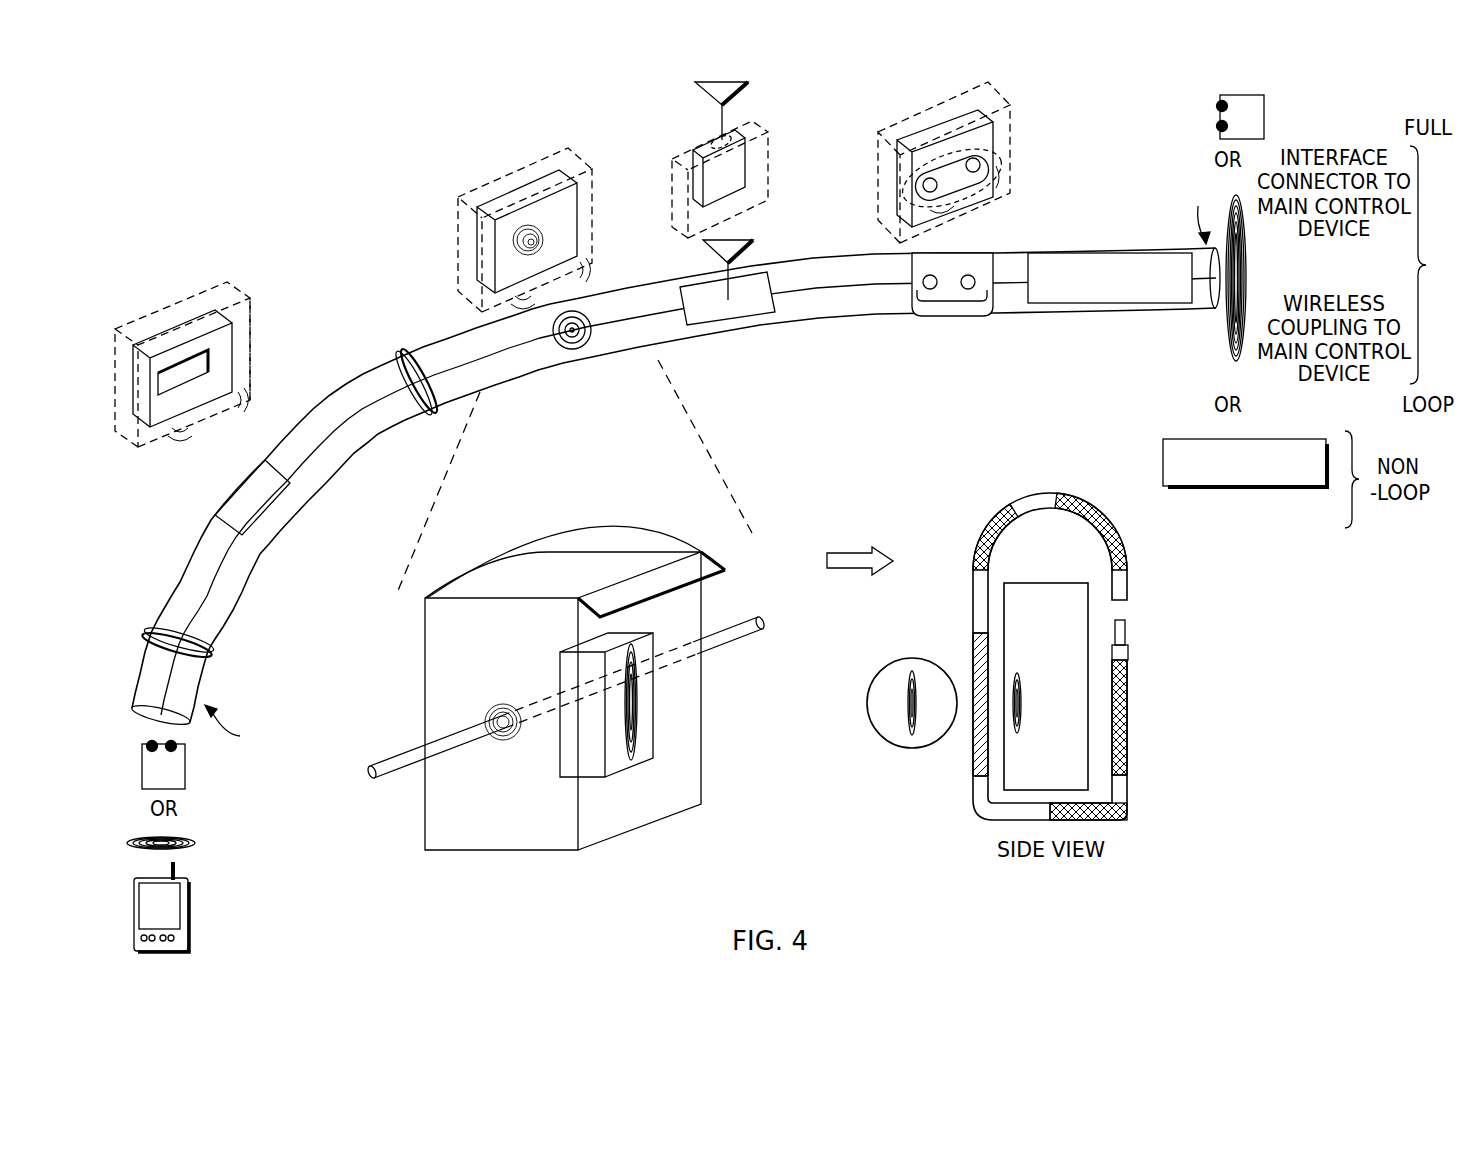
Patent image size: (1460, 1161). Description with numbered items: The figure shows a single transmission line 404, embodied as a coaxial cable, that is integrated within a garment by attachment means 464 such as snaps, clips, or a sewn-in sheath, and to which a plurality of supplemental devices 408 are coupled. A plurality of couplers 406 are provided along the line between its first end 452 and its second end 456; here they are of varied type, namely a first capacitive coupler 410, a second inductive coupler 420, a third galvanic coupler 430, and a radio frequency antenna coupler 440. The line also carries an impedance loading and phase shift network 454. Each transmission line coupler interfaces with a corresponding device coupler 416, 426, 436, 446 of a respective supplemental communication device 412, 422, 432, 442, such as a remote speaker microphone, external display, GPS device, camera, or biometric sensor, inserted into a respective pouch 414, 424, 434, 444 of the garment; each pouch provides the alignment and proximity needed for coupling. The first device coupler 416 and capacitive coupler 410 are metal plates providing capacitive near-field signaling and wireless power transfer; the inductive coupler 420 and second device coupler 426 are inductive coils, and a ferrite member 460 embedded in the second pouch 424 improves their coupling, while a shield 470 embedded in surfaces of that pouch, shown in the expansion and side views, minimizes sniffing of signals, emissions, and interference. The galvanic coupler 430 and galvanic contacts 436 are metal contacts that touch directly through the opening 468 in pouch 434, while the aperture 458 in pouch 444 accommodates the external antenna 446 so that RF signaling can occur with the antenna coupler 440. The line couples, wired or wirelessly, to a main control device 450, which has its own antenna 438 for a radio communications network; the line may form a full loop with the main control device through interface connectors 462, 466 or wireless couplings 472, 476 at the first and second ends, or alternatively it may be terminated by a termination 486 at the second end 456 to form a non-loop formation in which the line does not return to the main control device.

The single transmission line 404 is at (340, 465).
The couplers 406 is at (558, 342).
The supplemental devices 408 is at (202, 310).
The first capacitive coupler 410 is at (250, 530).
The first supplemental communication device 412 is at (157, 330).
The first pouch 414 is at (252, 336).
The first device coupler 416 is at (207, 368).
The second inductive coupler 420 is at (575, 339).
The second supplemental communication device 422 is at (502, 193).
The second pouch 424 is at (594, 198).
The second device coupler 426 is at (540, 234).
The third galvanic coupler 430 is at (948, 306).
The third supplemental communication device 432 is at (915, 125).
The third pouch 434 is at (1012, 142).
The third device coupler 436 is at (907, 146).
The antenna 438 is at (178, 868).
The radio frequency antenna coupler 440 is at (706, 250).
The fourth supplemental communication device 442 is at (748, 180).
The fourth pouch 444 is at (680, 157).
The antenna 446 is at (707, 95).
The main control device 450 is at (188, 914).
The first end 452 is at (243, 729).
The impedance loading and phase shift network 454 is at (1110, 304).
The second end 456 is at (1198, 210).
The aperture 458 is at (748, 124).
The ferrite member 460 is at (972, 767).
The interface connector 462 is at (185, 767).
The attachment means 464 is at (402, 350).
The interface connector 466 is at (1264, 115).
The opening 468 is at (987, 160).
The shield 470 is at (982, 535).
The wireless coupling 472 is at (196, 844).
The wireless coupling 476 is at (1247, 266).
The termination 486 is at (1248, 488).